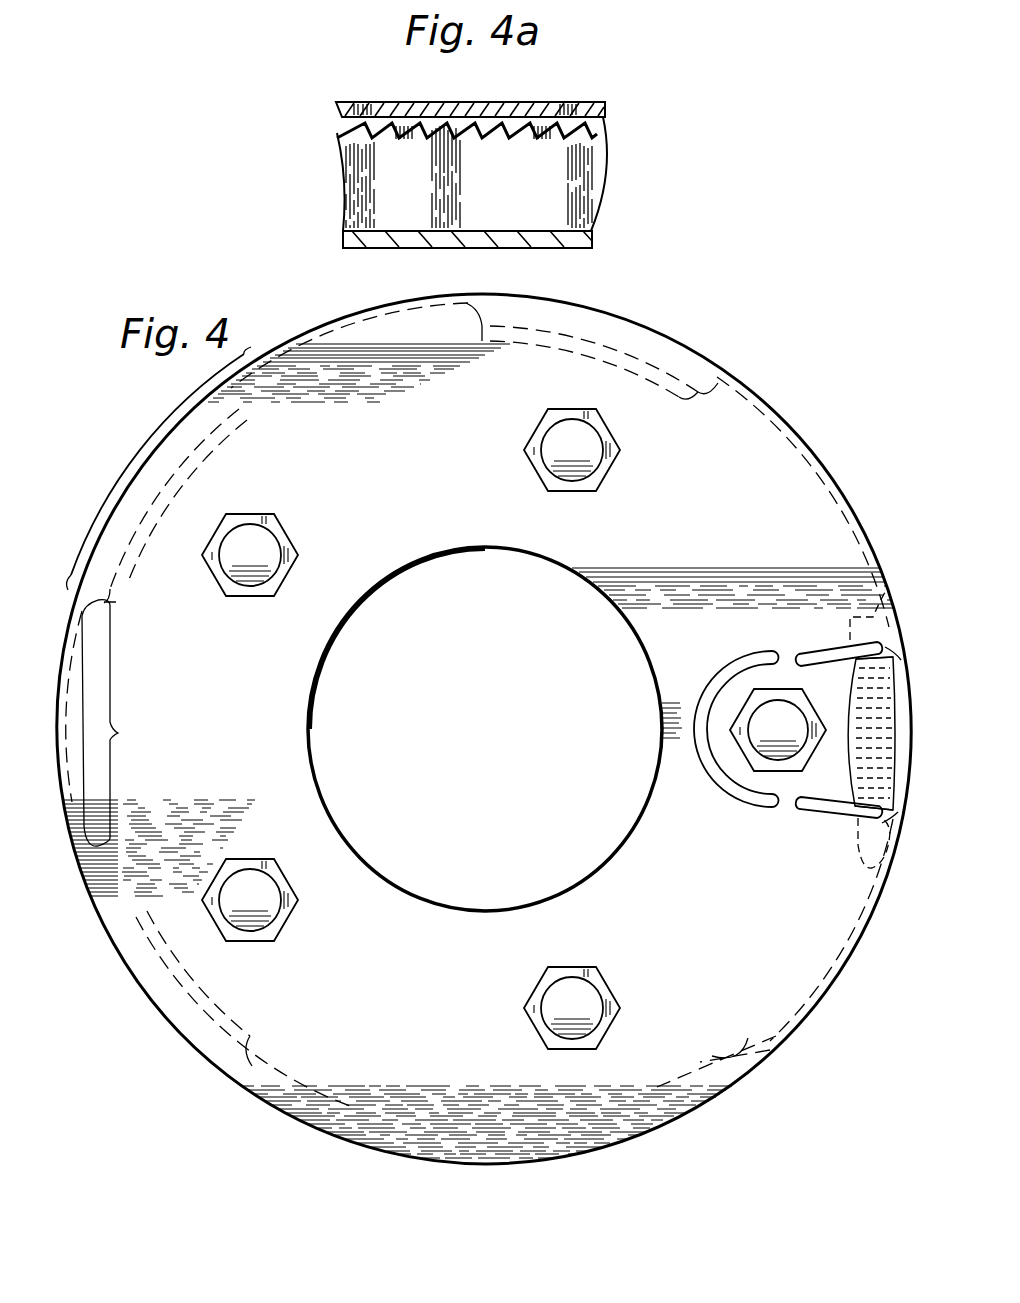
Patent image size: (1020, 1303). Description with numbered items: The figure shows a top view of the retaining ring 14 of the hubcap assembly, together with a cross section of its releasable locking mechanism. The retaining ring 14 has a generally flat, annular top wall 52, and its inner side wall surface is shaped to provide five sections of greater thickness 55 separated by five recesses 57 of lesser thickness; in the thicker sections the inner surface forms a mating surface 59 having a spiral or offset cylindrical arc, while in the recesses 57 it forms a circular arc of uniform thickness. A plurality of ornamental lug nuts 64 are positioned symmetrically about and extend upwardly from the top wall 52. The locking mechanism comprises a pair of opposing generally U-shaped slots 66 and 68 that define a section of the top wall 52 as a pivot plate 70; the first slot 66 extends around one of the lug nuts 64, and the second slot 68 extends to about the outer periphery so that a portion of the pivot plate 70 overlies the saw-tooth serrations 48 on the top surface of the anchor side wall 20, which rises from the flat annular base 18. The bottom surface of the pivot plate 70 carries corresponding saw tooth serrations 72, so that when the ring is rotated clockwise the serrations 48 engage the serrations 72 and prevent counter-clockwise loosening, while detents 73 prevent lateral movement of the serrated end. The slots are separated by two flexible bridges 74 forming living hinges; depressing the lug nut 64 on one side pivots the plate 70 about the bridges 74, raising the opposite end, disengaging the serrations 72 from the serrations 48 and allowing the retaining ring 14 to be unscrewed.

In FIG. 4, the retaining ring 14 is at (725, 364).
In FIG. 4A, the base 18 is at (533, 238).
In FIG. 4A, the side wall 20 is at (566, 207).
In FIG. 4A, the saw-tooth serrations 48 is at (537, 141).
In FIG. 4A, the top wall 52 is at (604, 113).
In FIG. 4, the top wall 52 is at (462, 509).
In FIG. 4, the sections of greater thickness 55 is at (122, 468).
In FIG. 4, the recesses 57 is at (120, 723).
In FIG. 4, the mating surface 59 is at (203, 458).
In FIG. 4, the ornamental lug nuts 64 is at (786, 726).
In FIG. 4, the first slot 66 is at (730, 787).
In FIG. 4A, the second slot 68 is at (370, 80).
In FIG. 4, the second slot 68 is at (843, 808).
In FIG. 4A, the pivot plate 70 is at (467, 102).
In FIG. 4, the pivot plate 70 is at (823, 673).
In FIG. 4A, the saw tooth serrations 72 is at (502, 135).
In FIG. 4, the saw tooth serrations 72 is at (845, 818).
In FIG. 4, the detents 73 is at (885, 647).
In FIG. 4, the flexible bridges 74 is at (787, 663).